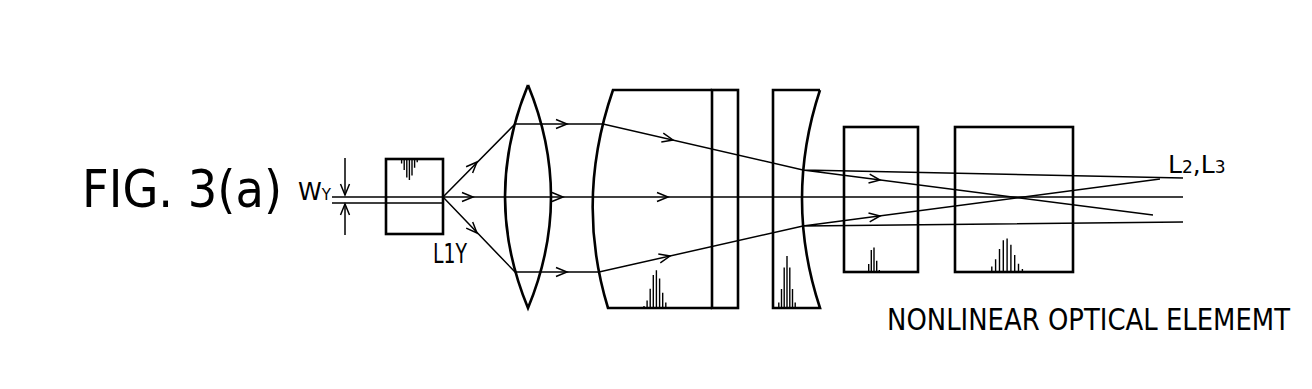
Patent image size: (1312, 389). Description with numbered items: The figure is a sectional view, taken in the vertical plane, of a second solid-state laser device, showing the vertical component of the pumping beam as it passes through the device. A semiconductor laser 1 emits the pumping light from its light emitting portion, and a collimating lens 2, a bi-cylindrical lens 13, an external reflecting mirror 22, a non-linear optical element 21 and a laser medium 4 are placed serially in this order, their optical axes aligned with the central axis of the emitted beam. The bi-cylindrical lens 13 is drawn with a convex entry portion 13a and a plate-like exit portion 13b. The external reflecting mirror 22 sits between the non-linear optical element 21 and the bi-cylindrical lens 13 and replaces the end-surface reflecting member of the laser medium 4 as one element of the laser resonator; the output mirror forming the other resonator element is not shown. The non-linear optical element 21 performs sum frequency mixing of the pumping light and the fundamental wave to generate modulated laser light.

The semiconductor laser 1 is at (427, 160).
The collimating lens 2 is at (522, 93).
The bi-cylindrical lens 13 is at (667, 154).
The convex lens portion 13a is at (603, 122).
The plane parallel plate portion 13b is at (744, 176).
The external reflecting mirror 22 is at (812, 90).
The non-linear optical element 21 is at (873, 273).
The laser medium 4 is at (1030, 127).